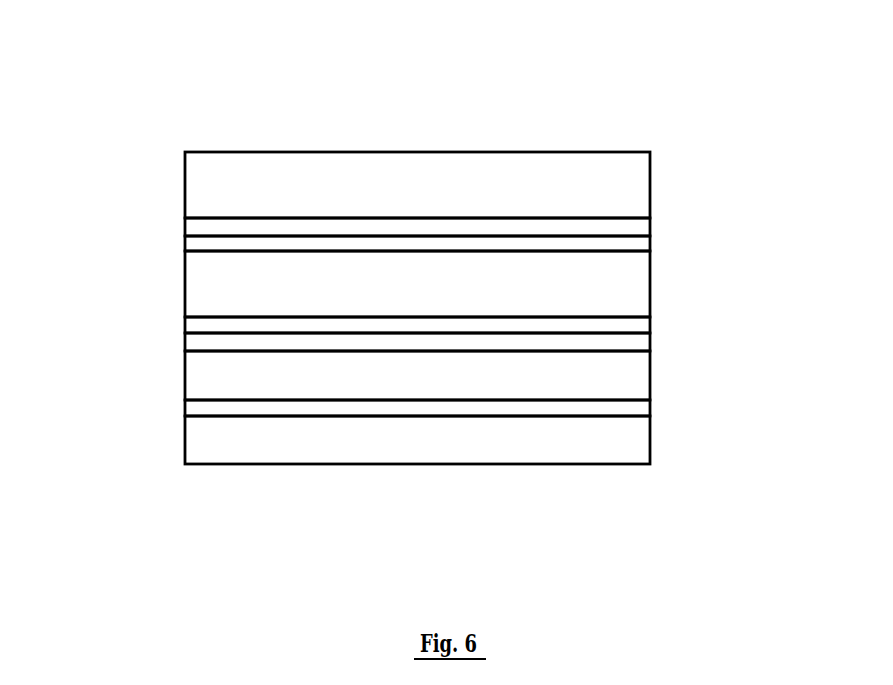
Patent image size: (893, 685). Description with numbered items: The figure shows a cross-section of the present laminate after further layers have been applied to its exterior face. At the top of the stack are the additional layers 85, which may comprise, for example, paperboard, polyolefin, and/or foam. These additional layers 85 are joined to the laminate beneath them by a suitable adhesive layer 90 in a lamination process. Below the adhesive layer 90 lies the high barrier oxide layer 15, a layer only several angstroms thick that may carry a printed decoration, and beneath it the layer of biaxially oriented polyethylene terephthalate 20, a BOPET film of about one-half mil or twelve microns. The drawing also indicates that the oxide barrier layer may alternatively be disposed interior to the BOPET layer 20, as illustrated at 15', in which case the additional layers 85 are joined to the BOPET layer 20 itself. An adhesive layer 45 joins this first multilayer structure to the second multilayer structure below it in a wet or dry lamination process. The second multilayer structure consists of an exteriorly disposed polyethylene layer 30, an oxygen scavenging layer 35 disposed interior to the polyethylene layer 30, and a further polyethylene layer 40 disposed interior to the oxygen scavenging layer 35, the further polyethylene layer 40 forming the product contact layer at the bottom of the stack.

The additional layers 85 is at (226, 188).
The adhesive layer 90 is at (620, 229).
The high barrier oxide layer 15 is at (332, 216).
The layer of biaxially oriented polyethylene terephthalate 20 is at (620, 290).
The oxide barrier layer 15' is at (332, 299).
The adhesive layer 45 is at (200, 343).
The polyethylene layer 30 is at (620, 368).
The oxygen scavenging layer 35 is at (222, 405).
The further polyethylene layer 40 is at (548, 453).